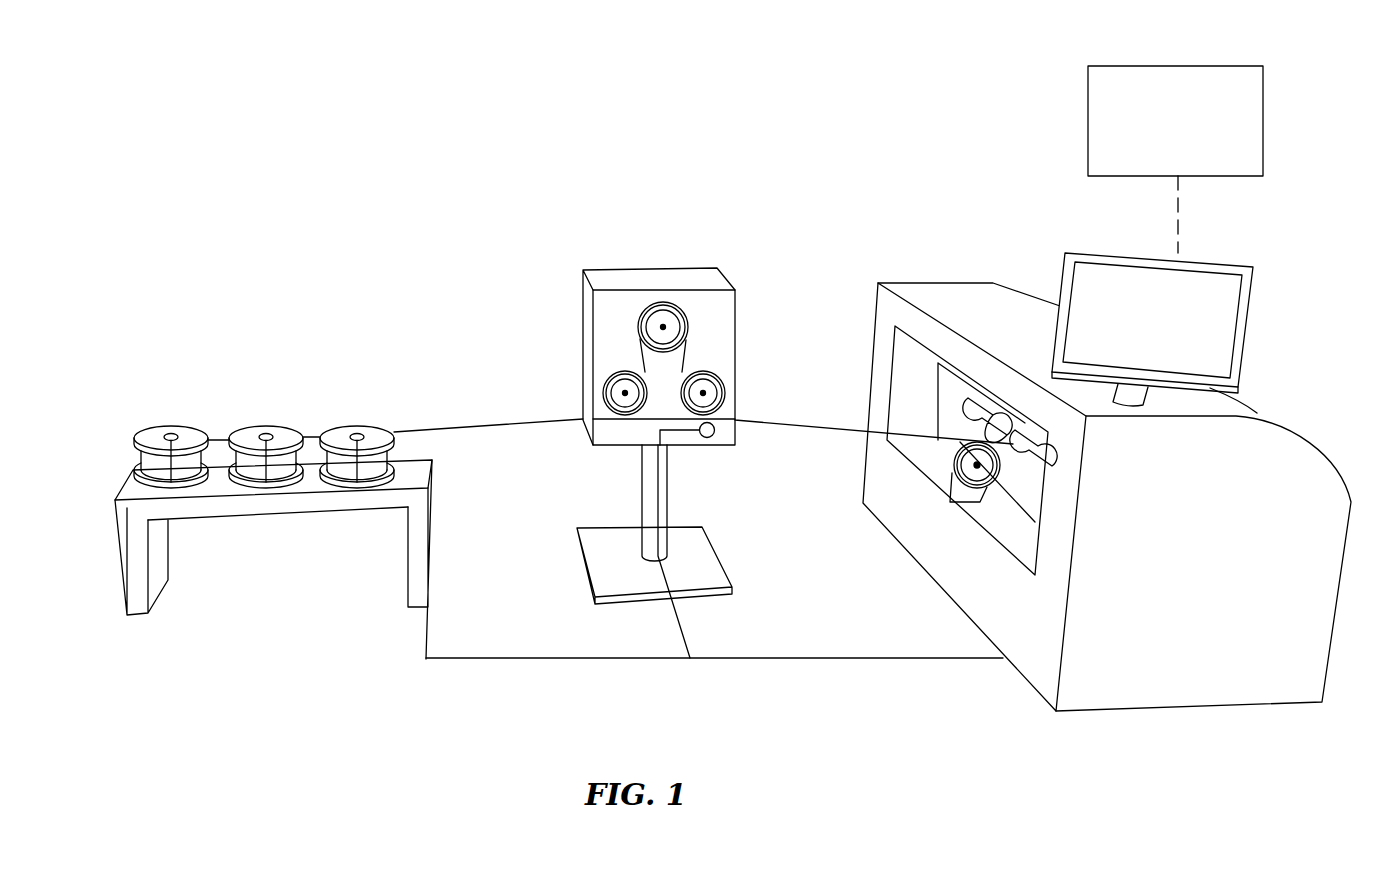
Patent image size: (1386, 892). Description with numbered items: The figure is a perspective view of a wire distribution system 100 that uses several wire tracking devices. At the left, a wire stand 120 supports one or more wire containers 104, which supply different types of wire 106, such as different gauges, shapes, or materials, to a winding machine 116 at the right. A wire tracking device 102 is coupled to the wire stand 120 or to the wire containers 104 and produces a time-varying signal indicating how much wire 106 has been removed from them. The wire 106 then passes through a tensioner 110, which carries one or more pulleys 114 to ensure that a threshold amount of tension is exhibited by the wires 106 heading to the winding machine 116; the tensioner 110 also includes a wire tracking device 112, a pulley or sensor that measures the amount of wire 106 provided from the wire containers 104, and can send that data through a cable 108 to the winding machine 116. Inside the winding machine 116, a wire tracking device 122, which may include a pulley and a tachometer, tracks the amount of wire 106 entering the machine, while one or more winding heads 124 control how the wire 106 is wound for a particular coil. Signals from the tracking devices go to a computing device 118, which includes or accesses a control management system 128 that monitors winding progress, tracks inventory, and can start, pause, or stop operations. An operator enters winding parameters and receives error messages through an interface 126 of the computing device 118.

The wire distribution system 100 is at (198, 128).
The wire tracking device 102 is at (174, 432).
The wire containers 104 is at (333, 428).
The wire 106 is at (467, 428).
The cable 108 is at (597, 658).
The tensioner 110 is at (681, 423).
The wire tracking device 112 is at (712, 439).
The pulleys 114 is at (690, 324).
The winding machine 116 is at (1106, 463).
The computing device 118 is at (1143, 297).
The wire stand 120 is at (405, 590).
The wire tracking device 122 is at (955, 472).
The winding heads 124 is at (964, 410).
The interface 126 is at (1126, 332).
The control management system 128 is at (1162, 166).